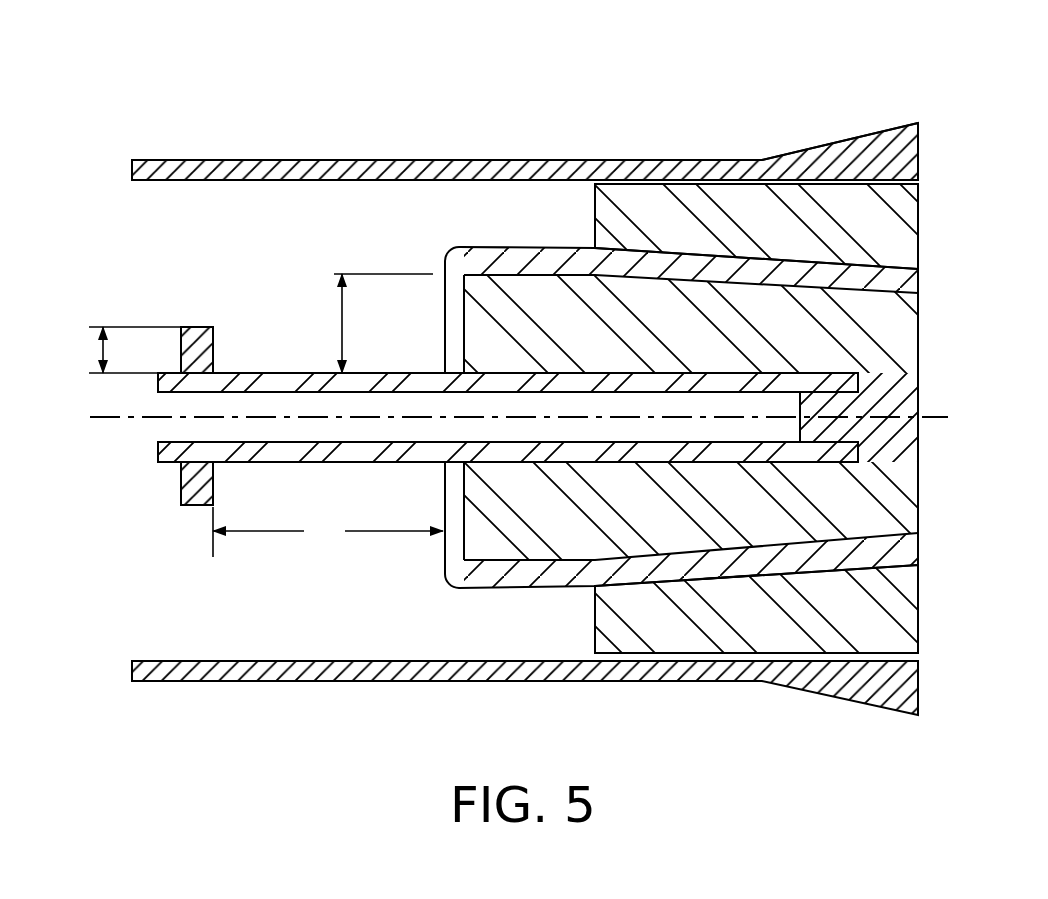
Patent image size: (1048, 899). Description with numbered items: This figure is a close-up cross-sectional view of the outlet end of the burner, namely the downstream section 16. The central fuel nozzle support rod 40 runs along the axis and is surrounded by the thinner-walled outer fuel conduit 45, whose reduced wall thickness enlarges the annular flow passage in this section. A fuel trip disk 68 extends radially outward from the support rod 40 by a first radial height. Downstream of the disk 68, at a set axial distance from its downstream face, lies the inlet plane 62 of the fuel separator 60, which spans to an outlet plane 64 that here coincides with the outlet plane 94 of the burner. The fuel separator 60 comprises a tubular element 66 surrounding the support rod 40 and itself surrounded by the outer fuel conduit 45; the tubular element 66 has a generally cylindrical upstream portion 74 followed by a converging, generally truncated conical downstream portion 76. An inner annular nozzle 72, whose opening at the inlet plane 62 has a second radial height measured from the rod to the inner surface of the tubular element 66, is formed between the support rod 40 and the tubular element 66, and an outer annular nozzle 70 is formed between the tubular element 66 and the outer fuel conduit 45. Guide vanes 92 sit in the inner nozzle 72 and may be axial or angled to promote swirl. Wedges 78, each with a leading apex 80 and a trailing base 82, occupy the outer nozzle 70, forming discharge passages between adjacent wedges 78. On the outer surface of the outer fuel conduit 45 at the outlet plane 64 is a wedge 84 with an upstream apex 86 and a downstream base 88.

The downstream section 16 is at (697, 56).
The central fuel nozzle support rod 40 is at (258, 380).
The thinner-walled outer fuel conduit 45 is at (311, 159).
The fuel separator 60 is at (434, 598).
The inlet plane 62 is at (443, 550).
The outlet plane 64 is at (918, 352).
The tubular element 66 is at (570, 257).
The fuel trip disk 68 is at (197, 327).
The outer annular nozzle 70 is at (510, 213).
The inner annular nozzle 72 is at (430, 302).
The generally cylindrical upstream portion 74 is at (517, 607).
The converging generally truncated conical downstream portion 76 is at (738, 580).
The wedges 78 is at (863, 617).
The leading apex 80 is at (595, 225).
The trailing base 82 is at (918, 220).
The wedge 84 is at (848, 137).
The upstream apex 86 is at (762, 158).
The downstream base 88 is at (918, 150).
The guide vanes 92 is at (680, 333).
The outlet plane of the burner 94 is at (918, 447).